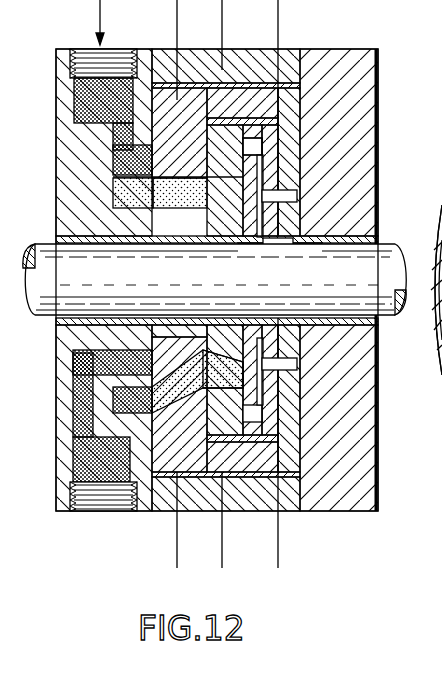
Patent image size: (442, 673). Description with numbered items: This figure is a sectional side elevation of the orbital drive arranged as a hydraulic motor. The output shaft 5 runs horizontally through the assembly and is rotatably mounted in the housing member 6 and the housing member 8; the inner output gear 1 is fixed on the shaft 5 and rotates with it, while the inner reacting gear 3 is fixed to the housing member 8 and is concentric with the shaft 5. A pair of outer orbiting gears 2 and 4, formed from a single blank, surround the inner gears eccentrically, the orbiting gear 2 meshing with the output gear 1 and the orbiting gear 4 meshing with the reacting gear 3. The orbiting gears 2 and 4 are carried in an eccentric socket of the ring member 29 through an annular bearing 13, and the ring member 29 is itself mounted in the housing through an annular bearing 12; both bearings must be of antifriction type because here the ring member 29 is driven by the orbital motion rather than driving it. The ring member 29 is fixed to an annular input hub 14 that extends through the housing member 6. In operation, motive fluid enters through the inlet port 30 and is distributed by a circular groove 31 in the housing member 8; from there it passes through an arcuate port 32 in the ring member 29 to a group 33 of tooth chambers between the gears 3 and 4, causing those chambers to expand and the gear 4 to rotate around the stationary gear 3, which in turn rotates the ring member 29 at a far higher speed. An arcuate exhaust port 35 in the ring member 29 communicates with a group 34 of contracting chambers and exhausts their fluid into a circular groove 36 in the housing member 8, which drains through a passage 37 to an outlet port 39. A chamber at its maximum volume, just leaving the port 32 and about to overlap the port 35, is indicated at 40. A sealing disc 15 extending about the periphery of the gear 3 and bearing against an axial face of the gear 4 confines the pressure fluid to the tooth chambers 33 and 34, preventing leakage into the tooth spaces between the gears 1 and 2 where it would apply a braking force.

The inner output gear 1 is at (283, 221).
The outer orbiting gear 2 is at (286, 182).
The inner reacting gear 3 is at (228, 178).
The outer orbiting gear 4 is at (233, 168).
The output shaft 5 is at (367, 287).
The housing member 6 is at (378, 88).
The housing member 8 is at (82, 139).
The annular bearing 12 is at (253, 98).
The annular bearing 13 is at (305, 126).
The annular input hub 14 is at (177, 560).
The sealing disc 15 is at (258, 154).
The ring member 29 is at (290, 66).
The inlet port 30 is at (82, 47).
The circular groove 31 is at (113, 398).
The arcuate port 32 is at (175, 373).
The group of tooth chambers 33 is at (230, 367).
The group of chambers 34 is at (232, 190).
The arcuate exhaust port 35 is at (180, 197).
The circular groove 36 is at (128, 202).
The passage 37 is at (72, 372).
The outlet port 39 is at (115, 511).
The chamber 40 is at (441, 358).